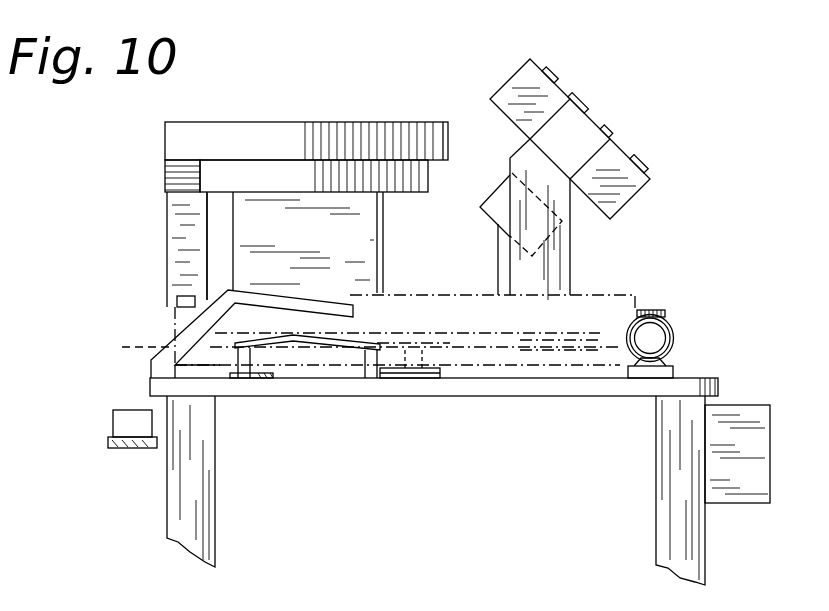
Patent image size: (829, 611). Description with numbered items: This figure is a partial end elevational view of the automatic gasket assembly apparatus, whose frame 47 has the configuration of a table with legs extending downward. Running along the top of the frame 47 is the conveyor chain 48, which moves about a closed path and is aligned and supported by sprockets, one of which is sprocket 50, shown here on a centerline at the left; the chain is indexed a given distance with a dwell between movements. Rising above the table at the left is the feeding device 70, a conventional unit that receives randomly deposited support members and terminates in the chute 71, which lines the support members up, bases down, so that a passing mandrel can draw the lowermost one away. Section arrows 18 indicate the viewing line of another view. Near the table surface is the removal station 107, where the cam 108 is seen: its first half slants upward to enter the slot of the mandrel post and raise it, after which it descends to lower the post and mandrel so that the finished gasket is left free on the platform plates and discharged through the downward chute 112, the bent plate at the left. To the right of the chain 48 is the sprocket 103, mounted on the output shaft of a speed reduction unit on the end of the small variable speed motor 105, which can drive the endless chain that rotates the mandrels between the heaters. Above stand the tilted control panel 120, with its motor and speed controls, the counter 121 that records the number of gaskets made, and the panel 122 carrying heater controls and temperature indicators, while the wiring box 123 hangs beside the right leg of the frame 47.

The section line arrows 18 is at (316, 273).
The frame 47 is at (488, 396).
The chain 48 is at (480, 330).
The sprocket 50 is at (129, 349).
The feeding device 70 is at (352, 106).
The chute 71 is at (178, 231).
The sprocket 103 is at (668, 310).
The variable speed motor 105 is at (660, 337).
The station 107 is at (317, 352).
The cam 108 is at (350, 341).
The downward chute 112 is at (188, 323).
The control panel 120 is at (520, 81).
The counter 121 is at (580, 125).
The panel 122 is at (497, 213).
The wiring box 123 is at (748, 477).